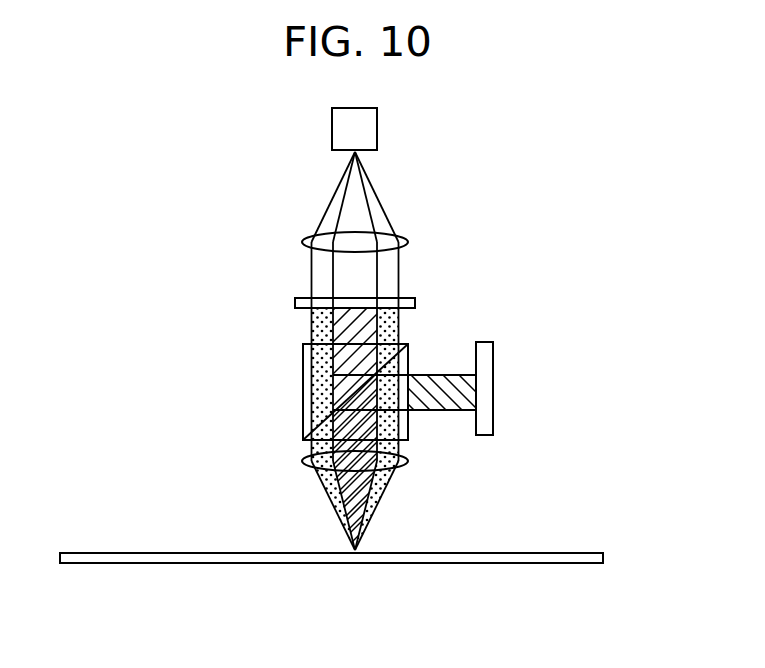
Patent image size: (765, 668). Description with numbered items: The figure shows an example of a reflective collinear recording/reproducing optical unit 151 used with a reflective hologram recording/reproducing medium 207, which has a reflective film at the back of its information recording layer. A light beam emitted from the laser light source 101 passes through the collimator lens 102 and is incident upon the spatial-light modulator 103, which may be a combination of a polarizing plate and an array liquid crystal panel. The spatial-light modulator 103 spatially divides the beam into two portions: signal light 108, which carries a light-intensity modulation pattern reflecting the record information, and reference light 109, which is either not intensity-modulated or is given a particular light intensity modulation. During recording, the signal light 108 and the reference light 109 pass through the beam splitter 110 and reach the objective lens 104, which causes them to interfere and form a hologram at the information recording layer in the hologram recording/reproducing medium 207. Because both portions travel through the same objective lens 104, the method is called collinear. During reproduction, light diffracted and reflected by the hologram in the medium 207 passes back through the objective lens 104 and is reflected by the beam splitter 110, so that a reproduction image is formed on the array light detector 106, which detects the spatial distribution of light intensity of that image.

The laser light source 101 is at (372, 128).
The collimator lens 102 is at (407, 242).
The spatial-light modulator 103 is at (415, 303).
The objective lens 104 is at (405, 462).
The array light detector 106 is at (496, 390).
The signal light 108 is at (345, 322).
The reference light 109 is at (340, 313).
The beam splitter 110 is at (303, 398).
The reflective collinear recording/reproducing optical unit 151 is at (524, 236).
The reflective hologram recording/reproducing medium 207 is at (552, 553).